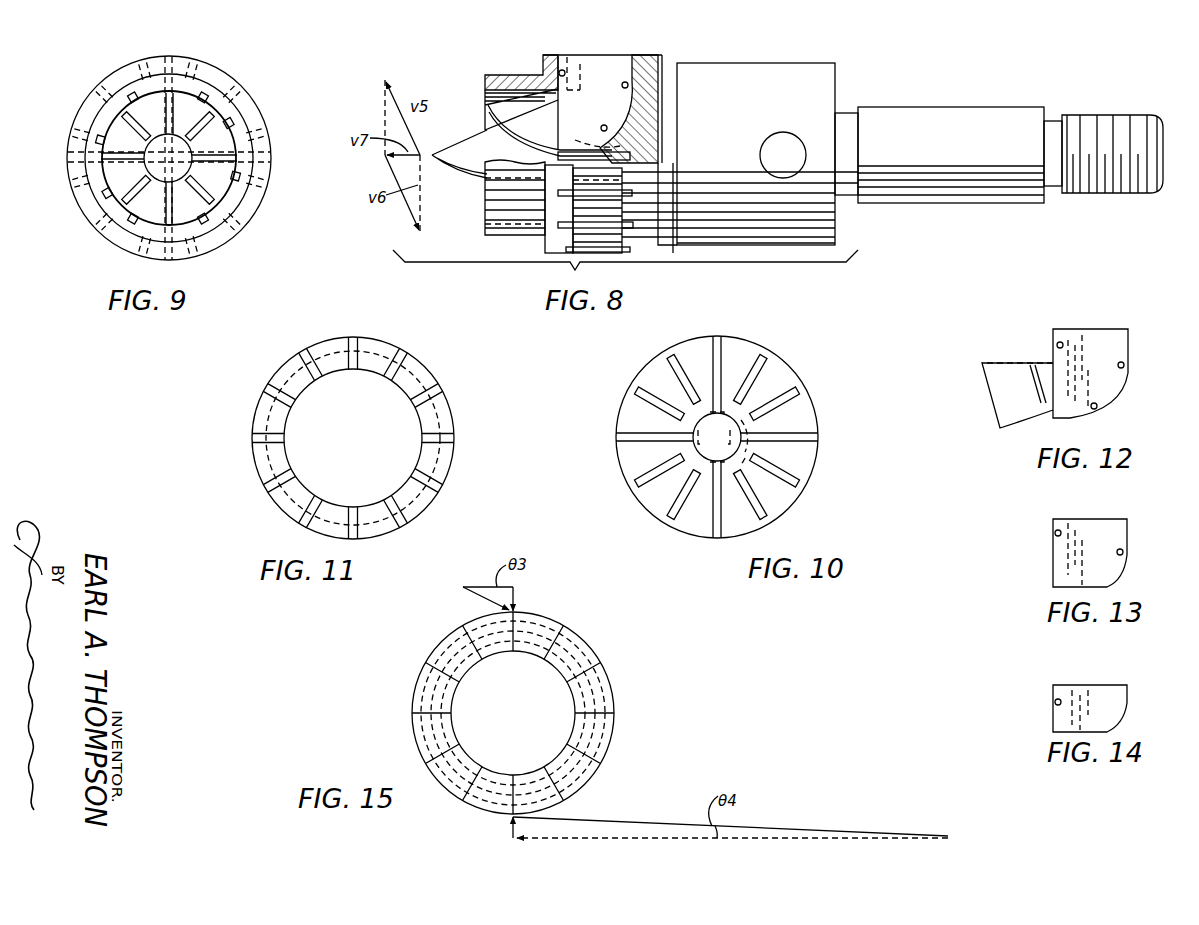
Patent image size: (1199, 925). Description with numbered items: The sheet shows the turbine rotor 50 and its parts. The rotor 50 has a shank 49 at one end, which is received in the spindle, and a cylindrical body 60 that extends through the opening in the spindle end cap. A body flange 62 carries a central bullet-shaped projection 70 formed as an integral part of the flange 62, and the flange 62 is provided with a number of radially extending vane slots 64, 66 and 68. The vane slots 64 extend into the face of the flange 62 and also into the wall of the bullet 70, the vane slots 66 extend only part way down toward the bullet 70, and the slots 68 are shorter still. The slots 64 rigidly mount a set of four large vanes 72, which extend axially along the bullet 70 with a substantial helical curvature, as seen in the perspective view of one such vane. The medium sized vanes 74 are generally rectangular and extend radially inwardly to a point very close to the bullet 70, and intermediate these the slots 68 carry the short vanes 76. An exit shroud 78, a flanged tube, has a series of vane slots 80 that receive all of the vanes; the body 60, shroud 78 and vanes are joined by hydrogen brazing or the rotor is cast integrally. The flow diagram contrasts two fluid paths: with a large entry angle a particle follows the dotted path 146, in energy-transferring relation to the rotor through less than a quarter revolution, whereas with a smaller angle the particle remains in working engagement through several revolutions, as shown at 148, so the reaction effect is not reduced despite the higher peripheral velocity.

In FIG. 8, the shank 49 is at (978, 110).
In FIG. 8, the turbine rotor 50 is at (745, 61).
In FIG. 8, the cylindrical body 60 is at (728, 158).
In FIG. 8, the body flange 62 is at (652, 70).
In FIG. 10, the body flange 62 is at (806, 424).
In FIG. 10, the vane slots 64 is at (718, 340).
In FIG. 10, the vane slots 66 is at (780, 376).
In FIG. 10, the vane slots 68 is at (754, 354).
In FIG. 8, the central bullet-shaped projection 70 is at (487, 180).
In FIG. 9, the large vanes 72 is at (108, 150).
In FIG. 8, the large vanes 72 is at (590, 75).
In FIG. 12, the large vanes 72 is at (1066, 338).
In FIG. 9, the medium sized vanes 74 is at (203, 122).
In FIG. 13, the medium sized vanes 74 is at (1113, 541).
In FIG. 9, the short vanes 76 is at (203, 92).
In FIG. 14, the short vanes 76 is at (1113, 701).
In FIG. 8, the exit shroud 78 is at (525, 86).
In FIG. 11, the exit shroud 78 is at (433, 390).
In FIG. 11, the vane slots 80 is at (392, 356).
In FIG. 15, the fluid particle path 146 is at (557, 622).
In FIG. 15, the fluid particle path 148 is at (606, 690).